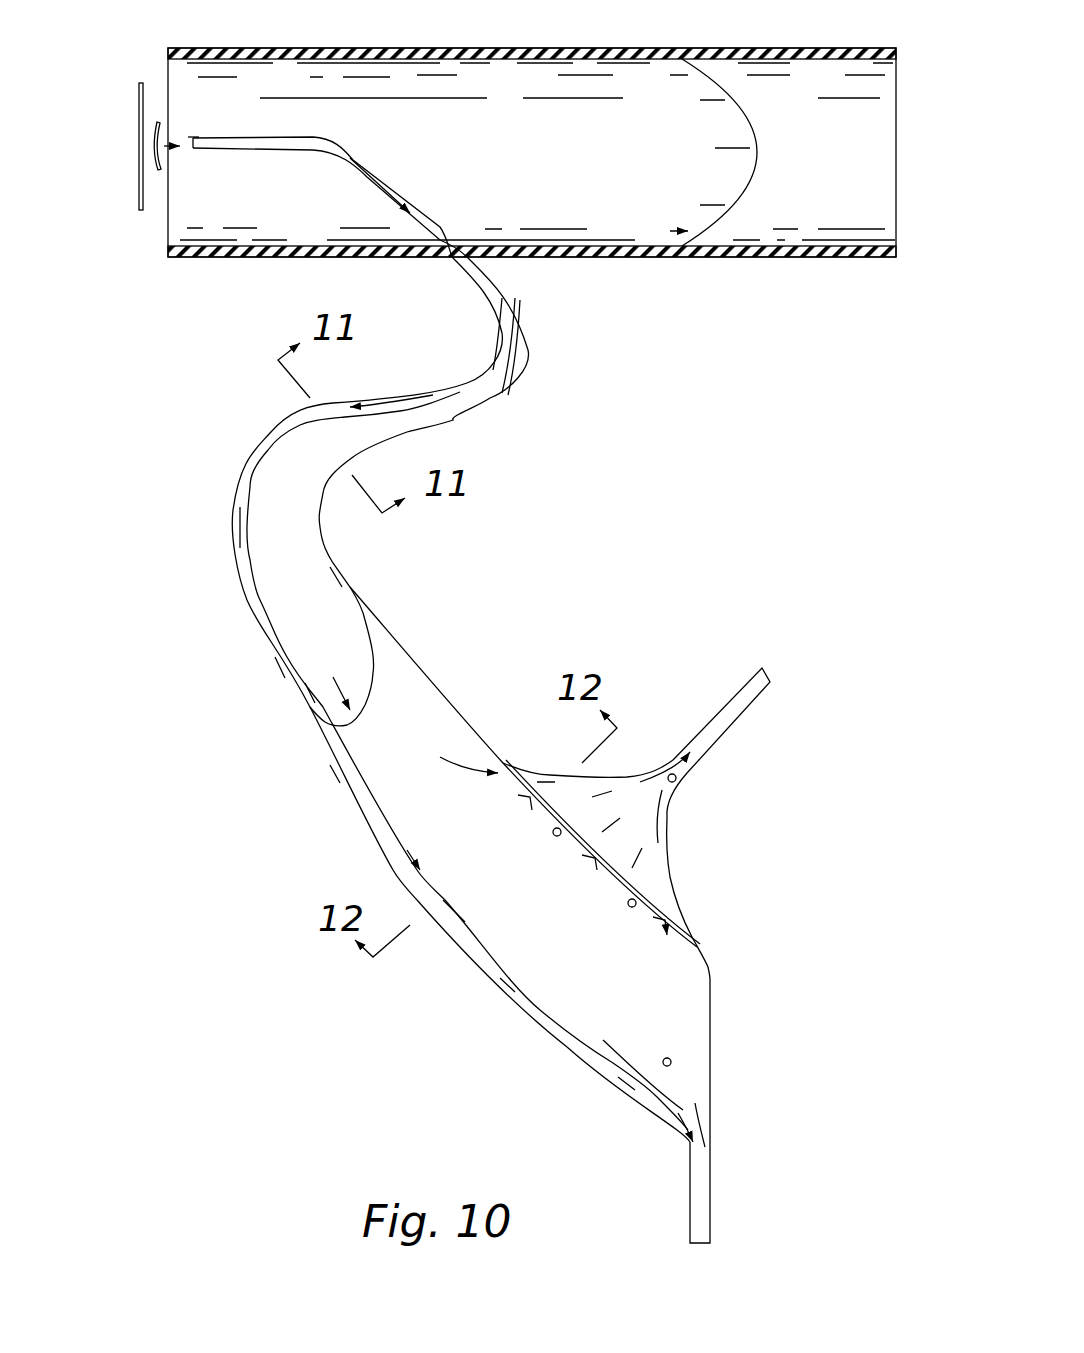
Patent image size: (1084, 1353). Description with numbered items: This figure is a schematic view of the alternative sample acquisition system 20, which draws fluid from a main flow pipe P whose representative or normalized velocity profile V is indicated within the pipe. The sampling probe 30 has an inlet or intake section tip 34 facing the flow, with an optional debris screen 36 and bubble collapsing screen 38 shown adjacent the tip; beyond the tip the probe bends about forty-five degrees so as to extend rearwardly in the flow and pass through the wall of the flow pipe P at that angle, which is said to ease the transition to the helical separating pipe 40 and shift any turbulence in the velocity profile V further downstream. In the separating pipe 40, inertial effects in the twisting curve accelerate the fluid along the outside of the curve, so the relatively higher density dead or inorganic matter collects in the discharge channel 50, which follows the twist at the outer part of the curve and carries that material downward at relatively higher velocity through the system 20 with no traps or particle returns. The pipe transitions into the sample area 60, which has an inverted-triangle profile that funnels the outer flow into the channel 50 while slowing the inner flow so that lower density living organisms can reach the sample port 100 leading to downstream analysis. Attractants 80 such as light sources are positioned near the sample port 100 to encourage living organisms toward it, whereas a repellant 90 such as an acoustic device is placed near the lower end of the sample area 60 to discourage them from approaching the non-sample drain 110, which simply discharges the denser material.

The sample acquisition system 20 is at (310, 1010).
The sampling probe 30 is at (283, 163).
The sampling tip 34 is at (193, 137).
The debris screen 36 is at (137, 187).
The bubble collapsing screen 38 is at (158, 173).
The separating pipe 40 is at (200, 572).
The discharge channel 50 is at (523, 390).
The sample area 60 is at (478, 1013).
The attractant 80 is at (553, 831).
The repellant 90 is at (671, 1062).
The sample port 100 is at (718, 690).
The non-sample drain 110 is at (732, 1193).
The flow pipe P is at (668, 297).
The velocity profile V is at (760, 173).